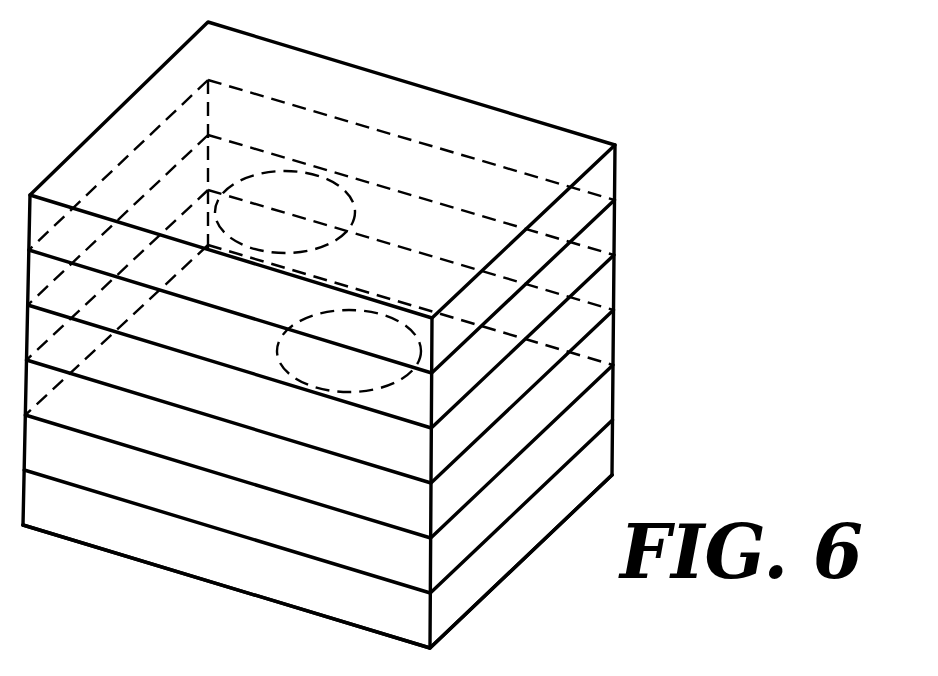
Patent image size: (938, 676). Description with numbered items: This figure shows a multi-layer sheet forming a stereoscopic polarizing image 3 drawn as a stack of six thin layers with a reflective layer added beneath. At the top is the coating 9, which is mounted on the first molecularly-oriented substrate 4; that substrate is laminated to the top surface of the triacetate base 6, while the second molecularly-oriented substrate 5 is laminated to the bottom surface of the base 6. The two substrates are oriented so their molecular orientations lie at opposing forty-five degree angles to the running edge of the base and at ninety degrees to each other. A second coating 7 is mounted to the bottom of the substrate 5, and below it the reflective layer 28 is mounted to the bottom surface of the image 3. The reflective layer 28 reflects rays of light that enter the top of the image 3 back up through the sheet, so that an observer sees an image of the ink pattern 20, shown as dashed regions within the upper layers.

The stereoscopic polarizing image 3 is at (399, 97).
The coating 9 is at (604, 179).
The first molecularly-oriented substrate 4 is at (604, 226).
The triacetate base 6 is at (603, 286).
The second molecularly-oriented substrate 5 is at (603, 338).
The second coating 7 is at (602, 392).
The reflective layer 28 is at (600, 445).
The ink pattern 20 is at (334, 186).